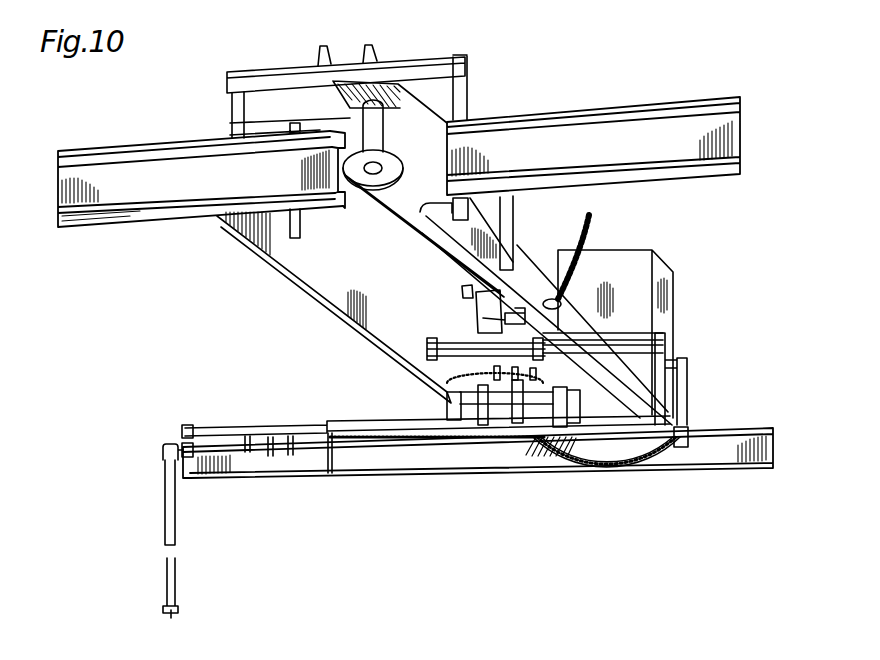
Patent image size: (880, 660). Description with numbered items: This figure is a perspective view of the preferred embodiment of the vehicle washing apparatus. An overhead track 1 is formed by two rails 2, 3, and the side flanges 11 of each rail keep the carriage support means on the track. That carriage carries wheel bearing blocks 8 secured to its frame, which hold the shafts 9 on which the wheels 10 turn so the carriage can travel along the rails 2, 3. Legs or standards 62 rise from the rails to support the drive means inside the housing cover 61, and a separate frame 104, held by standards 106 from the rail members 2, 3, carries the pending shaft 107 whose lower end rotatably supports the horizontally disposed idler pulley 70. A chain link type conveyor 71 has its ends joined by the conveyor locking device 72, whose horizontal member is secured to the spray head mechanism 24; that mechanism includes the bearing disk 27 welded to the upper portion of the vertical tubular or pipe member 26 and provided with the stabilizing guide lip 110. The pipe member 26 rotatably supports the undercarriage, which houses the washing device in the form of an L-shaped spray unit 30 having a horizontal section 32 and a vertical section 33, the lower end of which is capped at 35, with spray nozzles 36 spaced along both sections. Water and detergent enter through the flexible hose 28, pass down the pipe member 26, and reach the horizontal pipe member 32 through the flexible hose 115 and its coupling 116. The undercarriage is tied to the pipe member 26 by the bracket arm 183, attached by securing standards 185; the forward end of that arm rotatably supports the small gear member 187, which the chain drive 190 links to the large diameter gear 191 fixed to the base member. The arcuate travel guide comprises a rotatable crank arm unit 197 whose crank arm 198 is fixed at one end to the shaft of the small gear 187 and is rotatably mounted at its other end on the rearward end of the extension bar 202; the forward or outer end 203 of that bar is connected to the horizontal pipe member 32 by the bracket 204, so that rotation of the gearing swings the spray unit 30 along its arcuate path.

The track 1 is at (336, 278).
The rail 2 is at (305, 282).
The rail 3 is at (551, 299).
The wheel bearing block 8 is at (546, 343).
The shaft 9 is at (508, 365).
The wheel 10 is at (432, 344).
The side flange 11 is at (605, 346).
The spray head mechanism 24 is at (527, 427).
The vertical tubular or pipe member 26 is at (555, 301).
The bearing disk 27 is at (451, 326).
The flexible hose 28 is at (571, 243).
The L-shaped spray unit 30 is at (270, 460).
The horizontal section 32 is at (348, 474).
The vertical section 33 is at (163, 512).
The cap 35 is at (168, 612).
The spray nozzle 36 is at (246, 452).
The housing cover 61 is at (633, 257).
The legs or standards 62 is at (686, 392).
The idler pulley 70 is at (344, 176).
The chain link type conveyor 71 is at (414, 242).
The conveyor locking device 72 is at (470, 303).
The frame 104 is at (337, 60).
The standard 106 is at (234, 112).
The pending shaft 107 is at (378, 117).
The stabilizing guide lip 110 is at (531, 312).
The flexible hose 115 is at (612, 471).
The coupling 116 is at (679, 437).
The bracket arm 183 is at (447, 397).
The securing standard 185 is at (563, 407).
The small gear member 187 is at (424, 373).
The chain drive 190 is at (454, 411).
The large diameter gear 191 is at (545, 388).
The rotatable crank arm unit 197 is at (488, 438).
The crank arm 198 is at (436, 469).
The extension bar 202 is at (263, 426).
The forward or outer end 203 is at (190, 424).
The bracket 204 is at (182, 444).